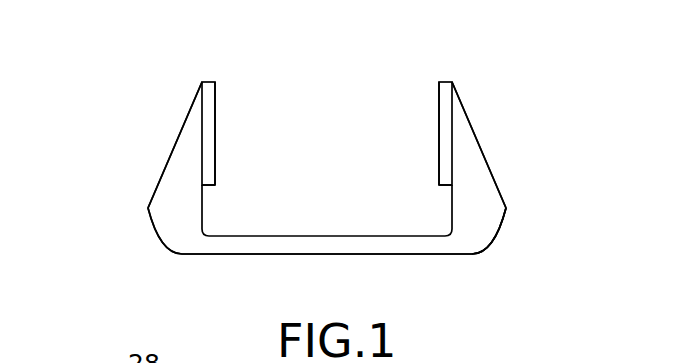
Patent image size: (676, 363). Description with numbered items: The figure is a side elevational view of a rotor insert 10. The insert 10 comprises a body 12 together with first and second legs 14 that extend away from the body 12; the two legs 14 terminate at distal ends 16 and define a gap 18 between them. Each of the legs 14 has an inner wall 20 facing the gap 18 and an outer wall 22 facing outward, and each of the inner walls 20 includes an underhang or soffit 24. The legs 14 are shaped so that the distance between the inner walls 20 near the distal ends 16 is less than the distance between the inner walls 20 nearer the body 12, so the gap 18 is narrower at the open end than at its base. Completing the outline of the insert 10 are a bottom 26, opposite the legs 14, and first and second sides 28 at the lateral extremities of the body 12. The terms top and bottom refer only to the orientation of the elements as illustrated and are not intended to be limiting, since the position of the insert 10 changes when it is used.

The insert 10 is at (110, 156).
The body 12 is at (320, 245).
The legs 14 is at (173, 198).
The distal ends 16 is at (205, 81).
The gap 18 is at (316, 97).
The inner wall 20 is at (216, 160).
The outer wall 22 is at (172, 150).
The soffit 24 is at (217, 188).
The bottom 26 is at (417, 257).
The sides 28 is at (478, 240).